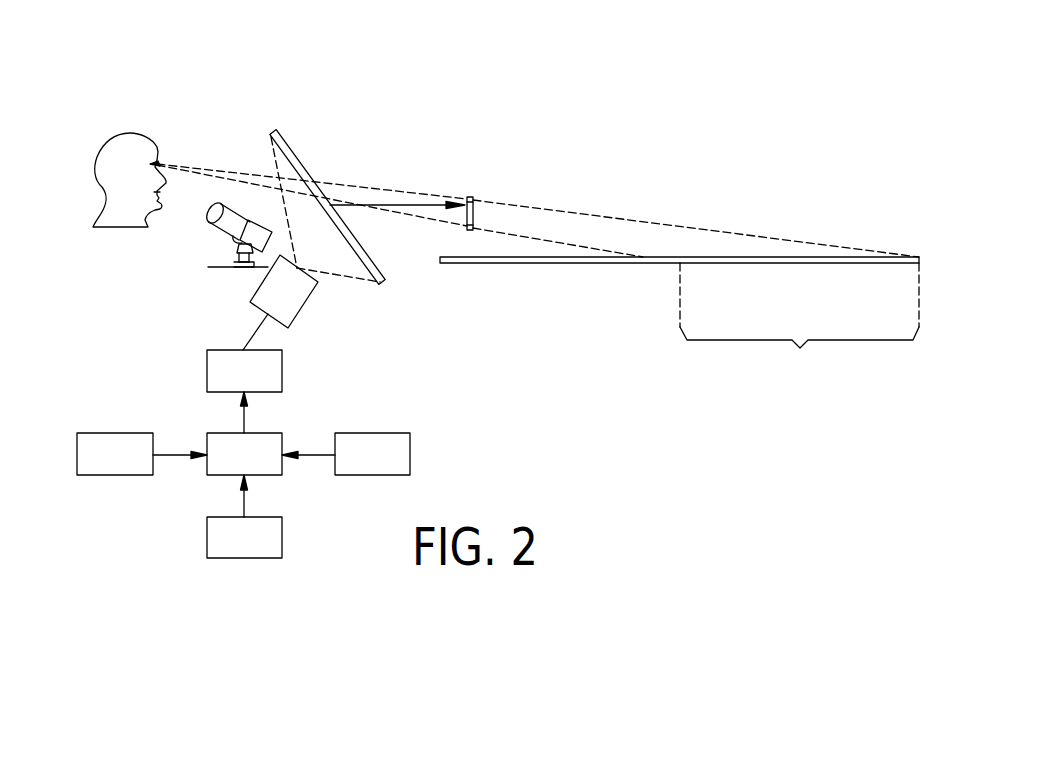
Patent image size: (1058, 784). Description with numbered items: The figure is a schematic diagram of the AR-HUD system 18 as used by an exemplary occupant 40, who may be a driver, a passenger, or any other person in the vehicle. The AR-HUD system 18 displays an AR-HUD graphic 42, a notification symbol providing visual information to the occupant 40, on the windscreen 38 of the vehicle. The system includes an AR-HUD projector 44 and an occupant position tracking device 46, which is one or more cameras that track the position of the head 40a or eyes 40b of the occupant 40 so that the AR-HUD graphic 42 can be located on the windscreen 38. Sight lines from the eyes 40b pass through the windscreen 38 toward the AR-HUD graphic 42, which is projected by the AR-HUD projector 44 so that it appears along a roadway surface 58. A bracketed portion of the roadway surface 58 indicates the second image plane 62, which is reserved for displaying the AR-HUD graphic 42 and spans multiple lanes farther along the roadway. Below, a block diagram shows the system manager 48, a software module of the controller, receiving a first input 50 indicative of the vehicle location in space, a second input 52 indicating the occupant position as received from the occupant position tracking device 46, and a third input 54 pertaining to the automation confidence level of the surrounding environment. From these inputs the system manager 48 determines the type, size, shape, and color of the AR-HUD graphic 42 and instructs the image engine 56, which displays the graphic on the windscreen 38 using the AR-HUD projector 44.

The AR-HUD system 18 is at (219, 39).
The windscreen 38 is at (287, 145).
The occupant 40 is at (131, 150).
The head 40a is at (132, 132).
The eyes 40b is at (160, 161).
The AR-HUD graphic 42 is at (470, 196).
The AR-HUD projector 44 is at (296, 304).
The occupant position tracking device 46 is at (237, 247).
The system manager 48 is at (258, 467).
The first input 50 is at (258, 551).
The second input 52 is at (386, 467).
The third input 54 is at (128, 467).
The image engine 56 is at (258, 384).
The roadway surface 58 is at (550, 264).
The second image plane 62 is at (799, 322).